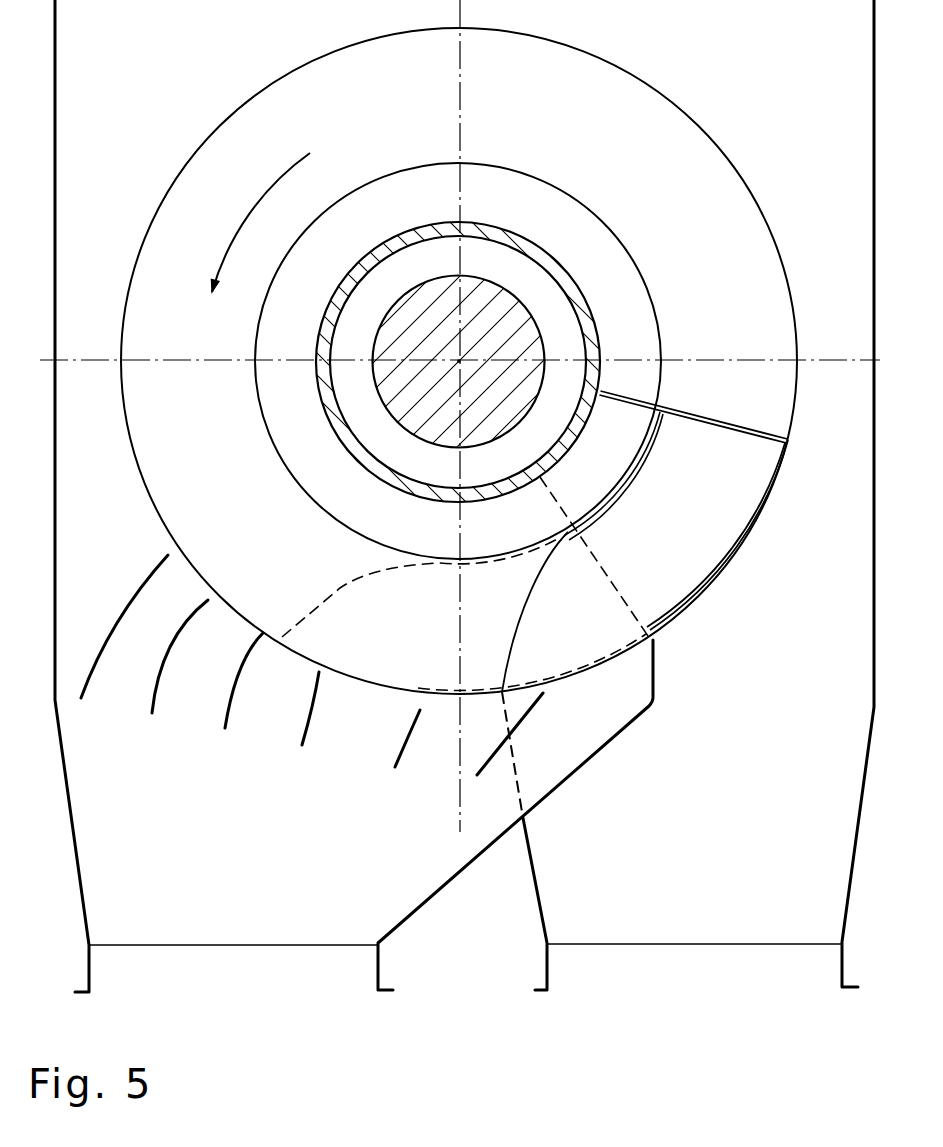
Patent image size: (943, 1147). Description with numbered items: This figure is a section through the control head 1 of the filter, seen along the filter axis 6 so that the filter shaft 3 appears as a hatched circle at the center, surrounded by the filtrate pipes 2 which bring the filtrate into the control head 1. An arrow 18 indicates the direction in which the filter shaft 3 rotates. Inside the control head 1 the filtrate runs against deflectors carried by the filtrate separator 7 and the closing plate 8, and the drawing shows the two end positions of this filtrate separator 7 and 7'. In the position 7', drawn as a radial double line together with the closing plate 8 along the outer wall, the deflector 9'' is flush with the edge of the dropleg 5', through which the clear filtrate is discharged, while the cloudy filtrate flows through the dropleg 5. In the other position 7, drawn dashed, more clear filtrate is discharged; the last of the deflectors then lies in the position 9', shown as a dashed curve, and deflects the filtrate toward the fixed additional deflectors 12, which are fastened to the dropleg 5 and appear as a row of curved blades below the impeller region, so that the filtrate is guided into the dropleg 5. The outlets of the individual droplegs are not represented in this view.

The control head 1 is at (109, 53).
The filtrate pipes 2 is at (197, 512).
The filter shaft 3 is at (438, 430).
The filter axis 6 is at (456, 361).
The arrow of filter shaft rotation 18 is at (238, 221).
The additional deflectors 12 is at (103, 633).
The deflector 9' is at (421, 591).
The deflector 9'' is at (566, 552).
The filtrate separator end position 7' is at (694, 401).
The closing plate 8 is at (712, 587).
The filtrate separator 7 is at (558, 583).
The dropleg 5 is at (515, 815).
The dropleg 5' is at (534, 841).